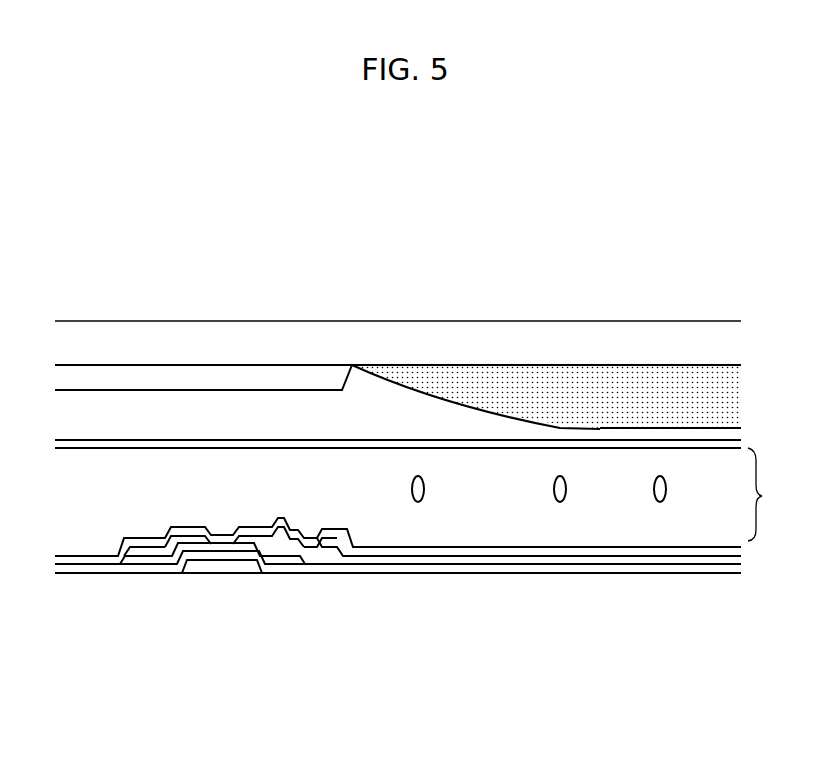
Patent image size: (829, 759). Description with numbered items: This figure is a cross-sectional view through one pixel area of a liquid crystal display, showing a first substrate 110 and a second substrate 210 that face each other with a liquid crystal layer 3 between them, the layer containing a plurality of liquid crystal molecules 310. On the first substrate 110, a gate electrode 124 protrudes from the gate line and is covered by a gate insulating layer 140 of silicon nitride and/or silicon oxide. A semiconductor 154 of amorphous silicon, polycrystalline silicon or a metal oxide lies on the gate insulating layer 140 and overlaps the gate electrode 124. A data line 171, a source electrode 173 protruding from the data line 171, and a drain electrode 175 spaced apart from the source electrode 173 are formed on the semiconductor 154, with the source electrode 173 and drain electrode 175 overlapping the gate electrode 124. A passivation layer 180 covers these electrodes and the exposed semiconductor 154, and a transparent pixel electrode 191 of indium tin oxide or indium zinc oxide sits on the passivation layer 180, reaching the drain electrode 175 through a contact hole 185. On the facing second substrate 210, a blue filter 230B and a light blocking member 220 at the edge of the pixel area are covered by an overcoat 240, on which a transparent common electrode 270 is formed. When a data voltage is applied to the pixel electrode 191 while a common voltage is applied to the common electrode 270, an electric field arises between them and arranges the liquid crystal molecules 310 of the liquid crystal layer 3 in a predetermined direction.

The first substrate 110 is at (666, 600).
The gate electrode 124 is at (223, 568).
The gate insulating layer 140 is at (581, 568).
The semiconductor 154 is at (203, 546).
The data line 171 is at (137, 552).
The source electrode 173 is at (186, 538).
The drain electrode 175 is at (277, 546).
The passivation layer 180 is at (500, 560).
The contact hole 185 is at (310, 540).
The pixel electrode 191 is at (418, 548).
The second substrate 210 is at (566, 338).
The light blocking member 220 is at (182, 376).
The blue filter 230B is at (656, 390).
The overcoat 240 is at (378, 397).
The common electrode 270 is at (468, 445).
The liquid crystal layer 3 is at (767, 494).
The liquid crystal molecules 310 is at (425, 489).